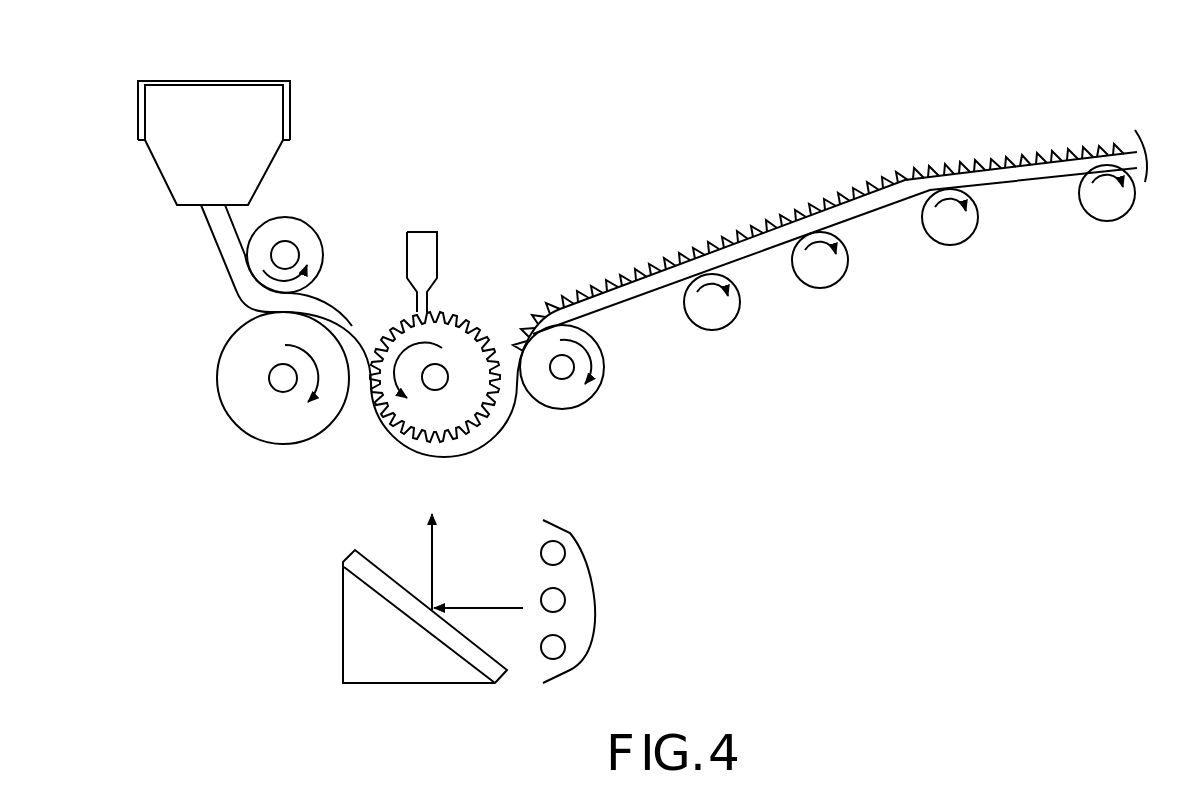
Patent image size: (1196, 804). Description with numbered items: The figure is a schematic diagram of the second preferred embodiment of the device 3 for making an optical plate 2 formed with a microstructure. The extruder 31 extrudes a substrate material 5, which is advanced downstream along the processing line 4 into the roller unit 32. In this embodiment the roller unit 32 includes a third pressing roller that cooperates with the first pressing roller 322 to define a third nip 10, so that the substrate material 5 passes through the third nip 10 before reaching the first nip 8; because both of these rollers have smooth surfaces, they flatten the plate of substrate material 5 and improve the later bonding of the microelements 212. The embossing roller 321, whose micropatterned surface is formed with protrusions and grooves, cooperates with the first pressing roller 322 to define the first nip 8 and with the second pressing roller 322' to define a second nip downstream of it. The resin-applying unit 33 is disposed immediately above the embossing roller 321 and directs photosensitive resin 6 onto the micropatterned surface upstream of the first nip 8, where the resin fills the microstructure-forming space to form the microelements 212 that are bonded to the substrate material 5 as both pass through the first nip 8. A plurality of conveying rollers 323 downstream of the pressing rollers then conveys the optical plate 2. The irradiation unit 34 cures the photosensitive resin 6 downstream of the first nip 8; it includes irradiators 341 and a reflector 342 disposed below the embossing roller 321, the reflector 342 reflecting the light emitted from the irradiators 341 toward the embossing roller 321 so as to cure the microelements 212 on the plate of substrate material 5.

The optical plate 2 is at (662, 228).
The device 3 is at (252, 583).
The processing line 4 is at (803, 109).
The substrate material 5 is at (223, 240).
The photosensitive resin 6 is at (423, 305).
The first nip 8 is at (365, 375).
The third nip 10 is at (277, 303).
The extruder 31 is at (300, 100).
The roller unit 32 is at (522, 445).
The resin-applying unit 33 is at (422, 240).
The irradiation unit 34 is at (605, 575).
The microelements 212 is at (695, 245).
The embossing roller 321 is at (448, 347).
The first pressing roller 322 is at (283, 400).
The second pressing roller 322' is at (603, 388).
The conveying rollers 323 is at (718, 315).
The irradiators 341 is at (562, 557).
The reflector 342 is at (448, 633).